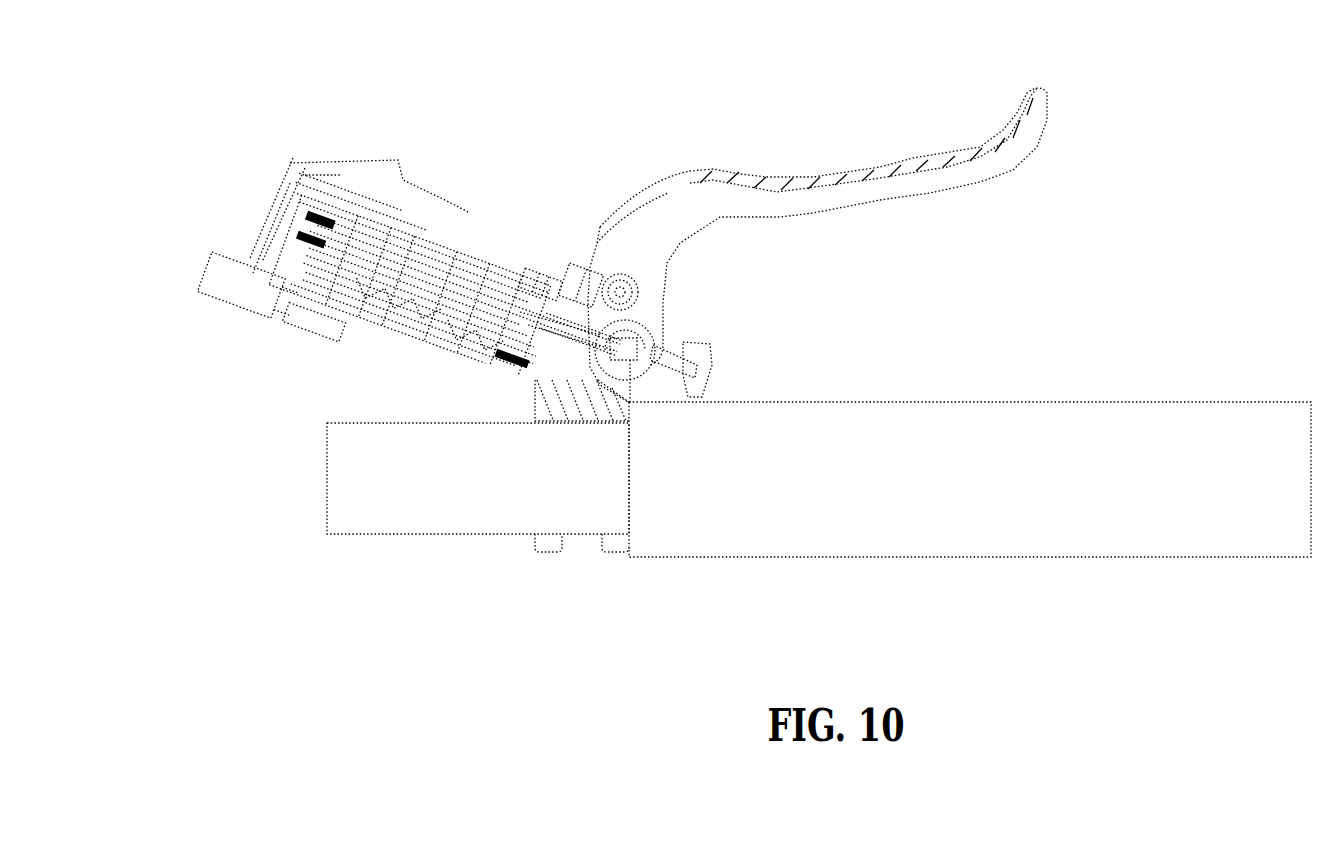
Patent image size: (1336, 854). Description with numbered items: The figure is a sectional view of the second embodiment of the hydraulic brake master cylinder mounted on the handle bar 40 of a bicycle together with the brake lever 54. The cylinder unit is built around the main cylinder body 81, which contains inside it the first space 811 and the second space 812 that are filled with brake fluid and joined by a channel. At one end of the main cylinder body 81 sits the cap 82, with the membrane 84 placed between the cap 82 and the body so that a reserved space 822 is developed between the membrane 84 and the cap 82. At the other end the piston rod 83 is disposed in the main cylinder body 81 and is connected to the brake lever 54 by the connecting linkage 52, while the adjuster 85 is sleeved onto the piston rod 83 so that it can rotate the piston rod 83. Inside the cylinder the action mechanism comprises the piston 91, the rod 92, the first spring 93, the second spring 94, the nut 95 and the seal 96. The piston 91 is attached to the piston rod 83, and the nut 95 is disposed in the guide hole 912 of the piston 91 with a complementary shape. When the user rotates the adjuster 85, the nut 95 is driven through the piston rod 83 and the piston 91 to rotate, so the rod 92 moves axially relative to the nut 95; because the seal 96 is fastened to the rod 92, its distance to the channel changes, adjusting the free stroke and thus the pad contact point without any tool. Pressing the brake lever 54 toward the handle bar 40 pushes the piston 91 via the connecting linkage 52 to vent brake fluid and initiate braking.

The handle bar 40 is at (1040, 560).
The connecting linkage 52 is at (643, 353).
The brake lever 54 is at (775, 180).
The main cylinder body 81 is at (472, 257).
The first space 811 is at (400, 232).
The second space 812 is at (318, 205).
The cap 82 is at (283, 182).
The reserved space 822 is at (301, 200).
The piston rod 83 is at (527, 380).
The membrane 84 is at (265, 250).
The adjuster 85 is at (550, 277).
The piston 91 is at (452, 305).
The guide hole 912 is at (470, 335).
The rod 92 is at (378, 272).
The first spring 93 is at (381, 200).
The second spring 94 is at (285, 250).
The nut 95 is at (432, 302).
The seal 96 is at (351, 250).